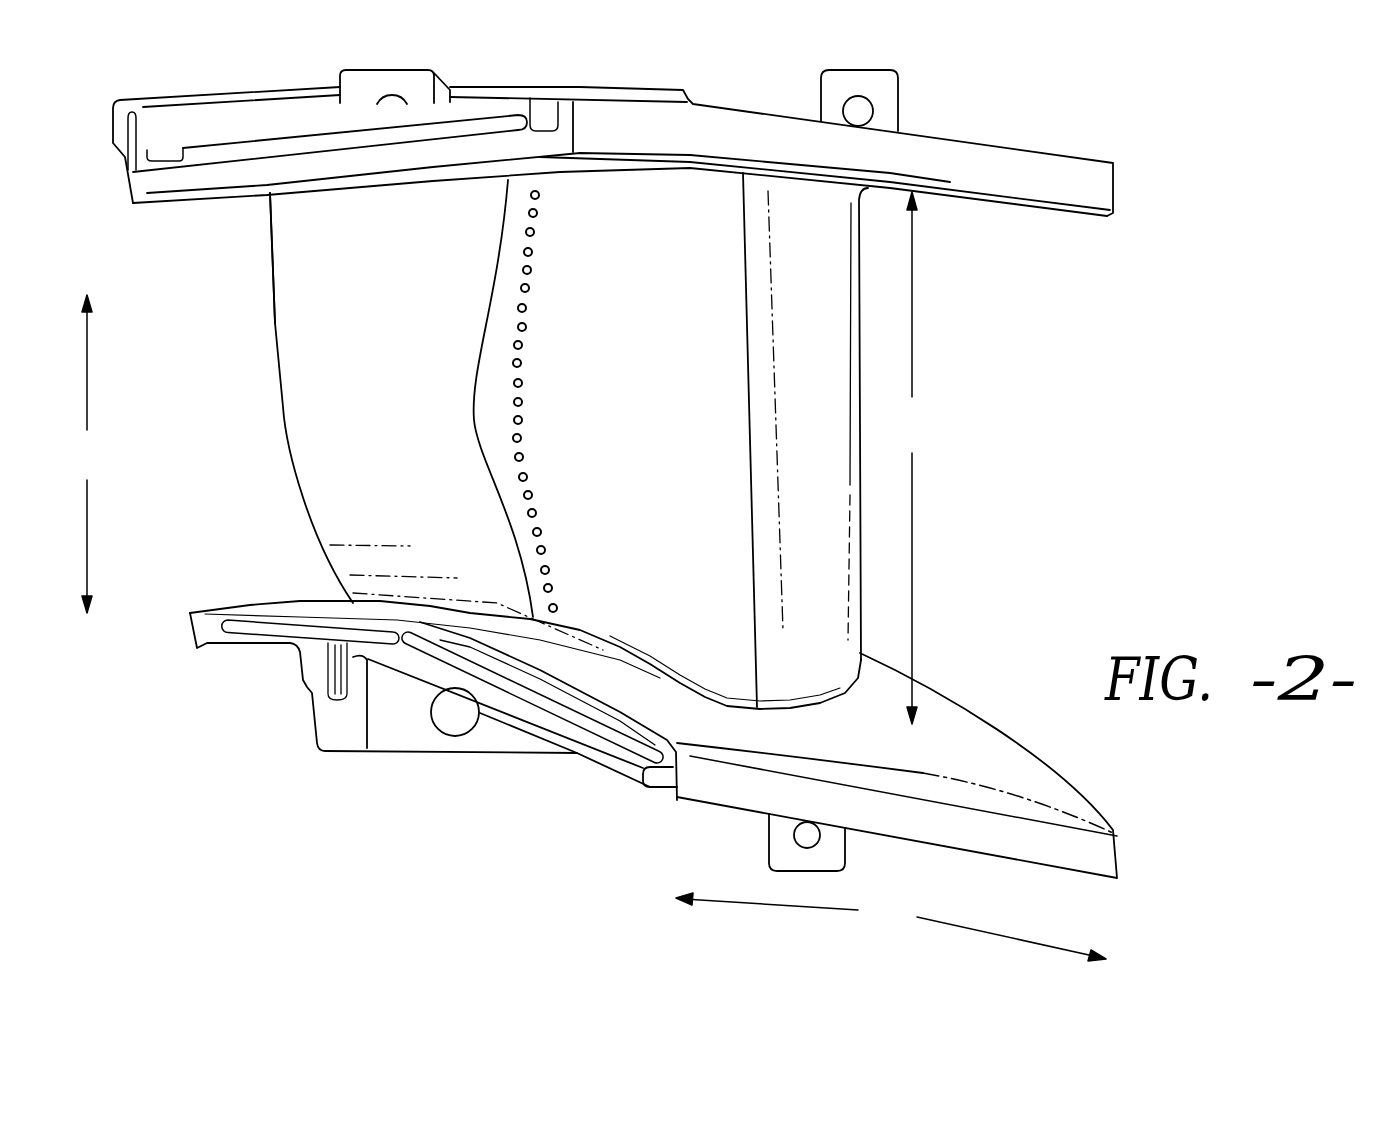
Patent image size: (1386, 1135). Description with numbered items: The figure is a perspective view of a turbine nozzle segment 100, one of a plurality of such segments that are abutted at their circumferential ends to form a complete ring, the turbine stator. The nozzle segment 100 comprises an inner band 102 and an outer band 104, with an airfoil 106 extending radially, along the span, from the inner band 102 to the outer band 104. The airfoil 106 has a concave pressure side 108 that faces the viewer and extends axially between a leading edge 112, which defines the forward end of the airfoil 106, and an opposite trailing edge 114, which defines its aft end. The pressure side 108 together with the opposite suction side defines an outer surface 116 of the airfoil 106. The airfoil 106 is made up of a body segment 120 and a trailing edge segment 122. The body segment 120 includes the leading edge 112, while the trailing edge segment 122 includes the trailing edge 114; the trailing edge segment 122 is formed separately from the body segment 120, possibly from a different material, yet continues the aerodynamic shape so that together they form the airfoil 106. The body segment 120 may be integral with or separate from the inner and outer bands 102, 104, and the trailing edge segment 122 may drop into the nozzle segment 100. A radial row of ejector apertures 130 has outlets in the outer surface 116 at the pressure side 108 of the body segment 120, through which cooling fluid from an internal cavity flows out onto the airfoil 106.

The turbine nozzle segment 100 is at (1230, 172).
The inner band 102 is at (1092, 857).
The outer band 104 is at (1020, 170).
The airfoil 106 is at (830, 302).
The pressure side 108 is at (398, 531).
The leading edge 112 is at (826, 535).
The trailing edge 114 is at (272, 405).
The outer surface 116 is at (668, 627).
The body segment 120 is at (638, 210).
The trailing edge segment 122 is at (295, 313).
The ejector aperture 130 is at (538, 578).